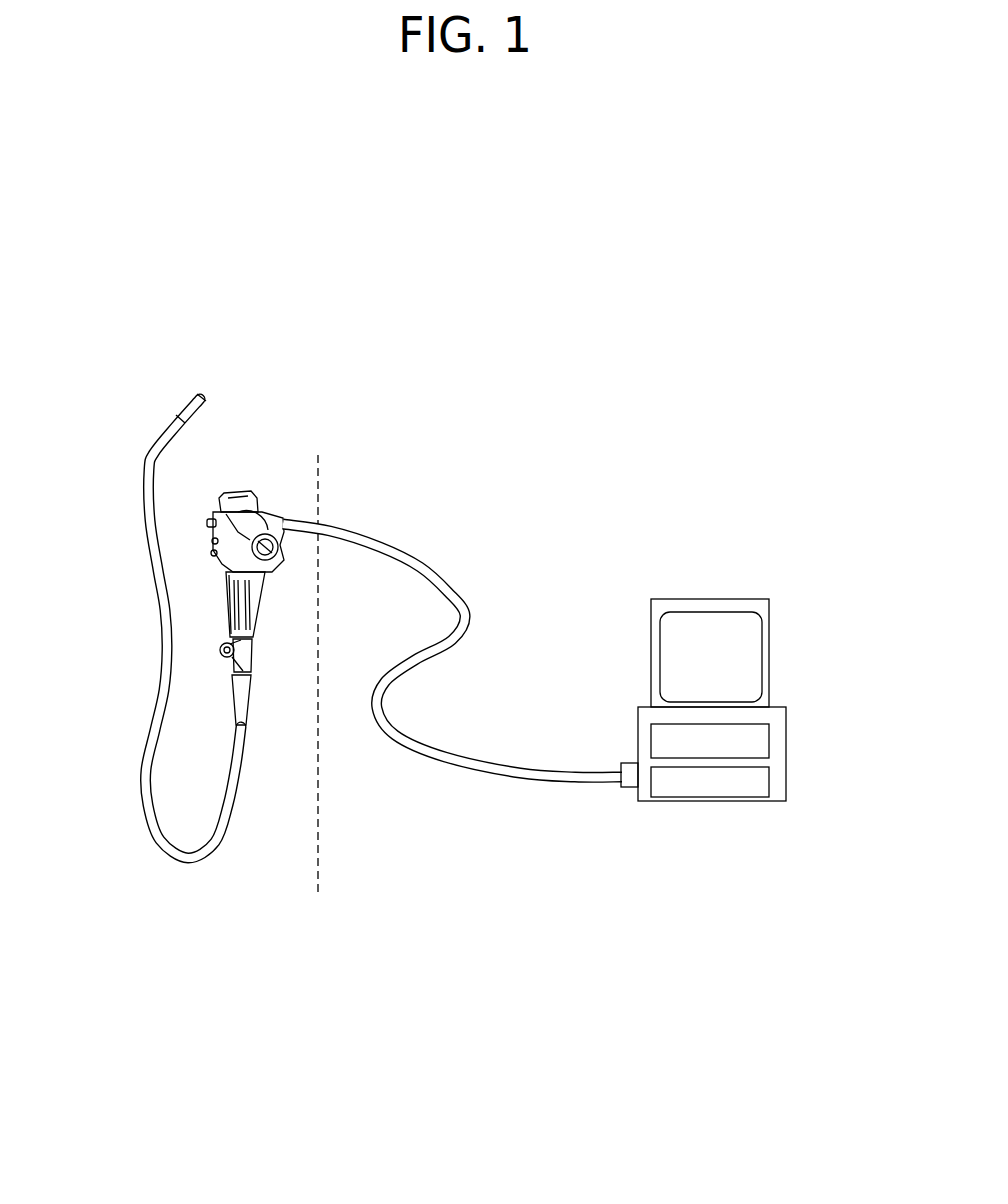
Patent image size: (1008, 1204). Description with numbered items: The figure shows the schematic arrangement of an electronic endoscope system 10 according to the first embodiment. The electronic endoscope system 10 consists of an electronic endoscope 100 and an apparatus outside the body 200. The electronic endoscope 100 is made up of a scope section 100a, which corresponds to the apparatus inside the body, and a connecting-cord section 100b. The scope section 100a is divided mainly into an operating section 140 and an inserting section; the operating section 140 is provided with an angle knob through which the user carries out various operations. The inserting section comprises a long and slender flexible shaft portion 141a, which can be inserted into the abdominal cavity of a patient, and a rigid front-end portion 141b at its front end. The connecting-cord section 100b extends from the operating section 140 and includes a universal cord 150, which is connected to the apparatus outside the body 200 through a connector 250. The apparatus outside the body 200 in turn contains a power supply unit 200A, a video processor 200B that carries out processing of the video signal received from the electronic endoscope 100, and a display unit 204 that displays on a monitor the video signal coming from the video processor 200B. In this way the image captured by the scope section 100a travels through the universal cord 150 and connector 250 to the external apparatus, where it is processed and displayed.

The electronic endoscope system 10 is at (553, 438).
The electronic endoscope 100 is at (547, 947).
The scope section 100a is at (312, 892).
The connecting-cord section 100b is at (607, 892).
The operating section 140 is at (213, 543).
The shaft portion 141a is at (158, 633).
The front-end portion 141b is at (200, 397).
The universal cord 150 is at (468, 743).
The apparatus outside the body 200 is at (744, 803).
The power supply unit 200A is at (770, 776).
The video processor 200B is at (770, 738).
The display unit 204 is at (725, 598).
The connector 250 is at (628, 789).